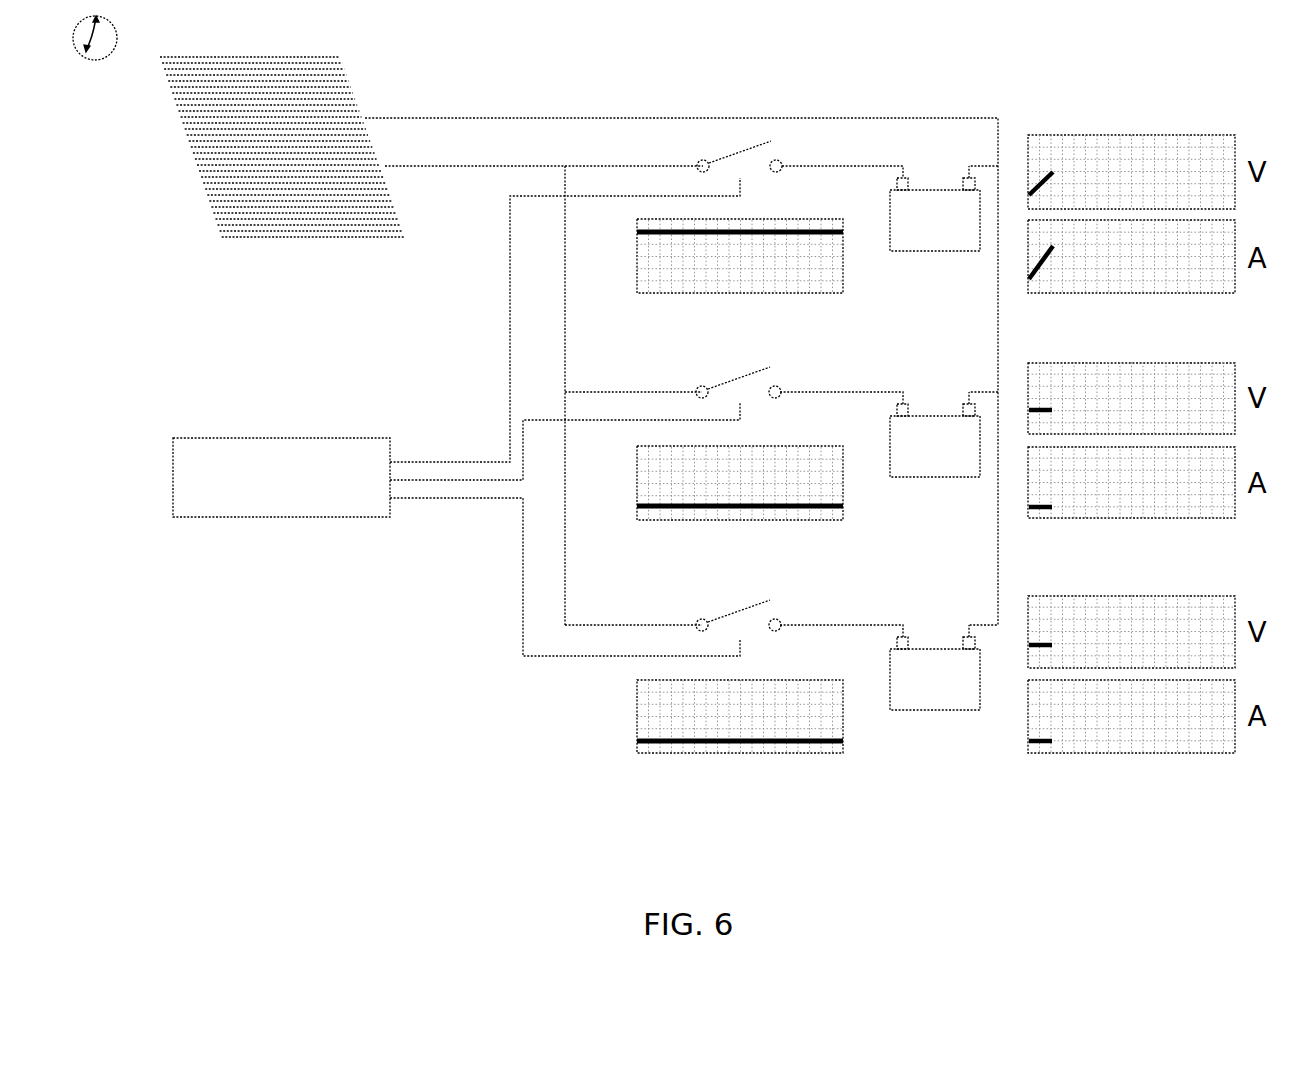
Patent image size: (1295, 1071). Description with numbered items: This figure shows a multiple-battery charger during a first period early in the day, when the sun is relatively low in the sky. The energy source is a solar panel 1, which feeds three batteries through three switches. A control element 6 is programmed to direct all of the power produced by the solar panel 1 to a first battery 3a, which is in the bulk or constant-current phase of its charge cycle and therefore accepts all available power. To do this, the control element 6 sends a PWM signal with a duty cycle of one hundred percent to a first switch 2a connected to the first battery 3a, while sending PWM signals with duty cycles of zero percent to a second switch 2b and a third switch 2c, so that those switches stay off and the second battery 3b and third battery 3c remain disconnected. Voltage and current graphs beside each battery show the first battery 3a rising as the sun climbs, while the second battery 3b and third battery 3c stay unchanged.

The solar panel 1 is at (292, 240).
The first switch 2a is at (764, 215).
The second switch 2b is at (764, 440).
The third switch 2c is at (764, 674).
The first battery 3a is at (949, 233).
The second battery 3b is at (949, 458).
The third battery 3c is at (949, 692).
The control element 6 is at (290, 489).